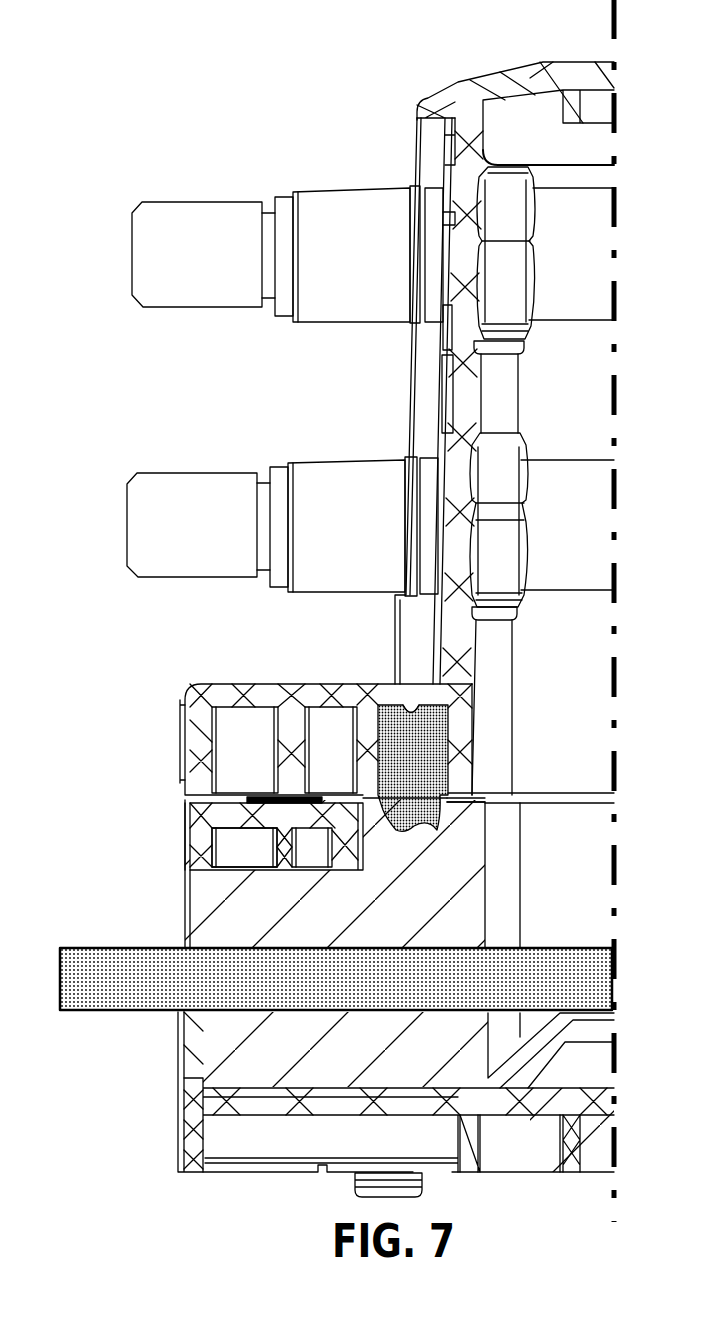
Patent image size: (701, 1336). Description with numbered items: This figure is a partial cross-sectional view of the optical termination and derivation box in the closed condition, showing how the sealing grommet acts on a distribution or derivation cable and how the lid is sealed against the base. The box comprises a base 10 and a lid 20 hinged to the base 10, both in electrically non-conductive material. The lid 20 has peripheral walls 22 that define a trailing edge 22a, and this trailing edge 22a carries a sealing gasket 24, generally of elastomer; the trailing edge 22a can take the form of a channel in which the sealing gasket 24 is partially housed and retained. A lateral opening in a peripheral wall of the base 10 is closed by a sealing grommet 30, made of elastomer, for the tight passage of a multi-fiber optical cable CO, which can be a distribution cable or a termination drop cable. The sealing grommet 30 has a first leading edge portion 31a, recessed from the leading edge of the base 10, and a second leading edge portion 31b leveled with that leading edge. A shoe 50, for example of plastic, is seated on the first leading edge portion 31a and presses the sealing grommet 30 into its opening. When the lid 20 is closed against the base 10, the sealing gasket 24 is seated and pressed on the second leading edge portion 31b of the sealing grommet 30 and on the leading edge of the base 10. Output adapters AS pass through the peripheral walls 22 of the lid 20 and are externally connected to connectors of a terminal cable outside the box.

The base 10 is at (157, 1159).
The lid 20 is at (416, 86).
The peripheral walls 22 is at (467, 185).
The trailing edge 22a is at (411, 713).
The sealing gasket 24 is at (420, 748).
The sealing grommet 30 is at (490, 917).
The first leading edge portion 31a is at (247, 866).
The second leading edge portion 31b is at (455, 793).
The shoe 50 is at (186, 803).
The output adapters AS is at (172, 198).
The multi-fiber optical cable CO is at (119, 1019).